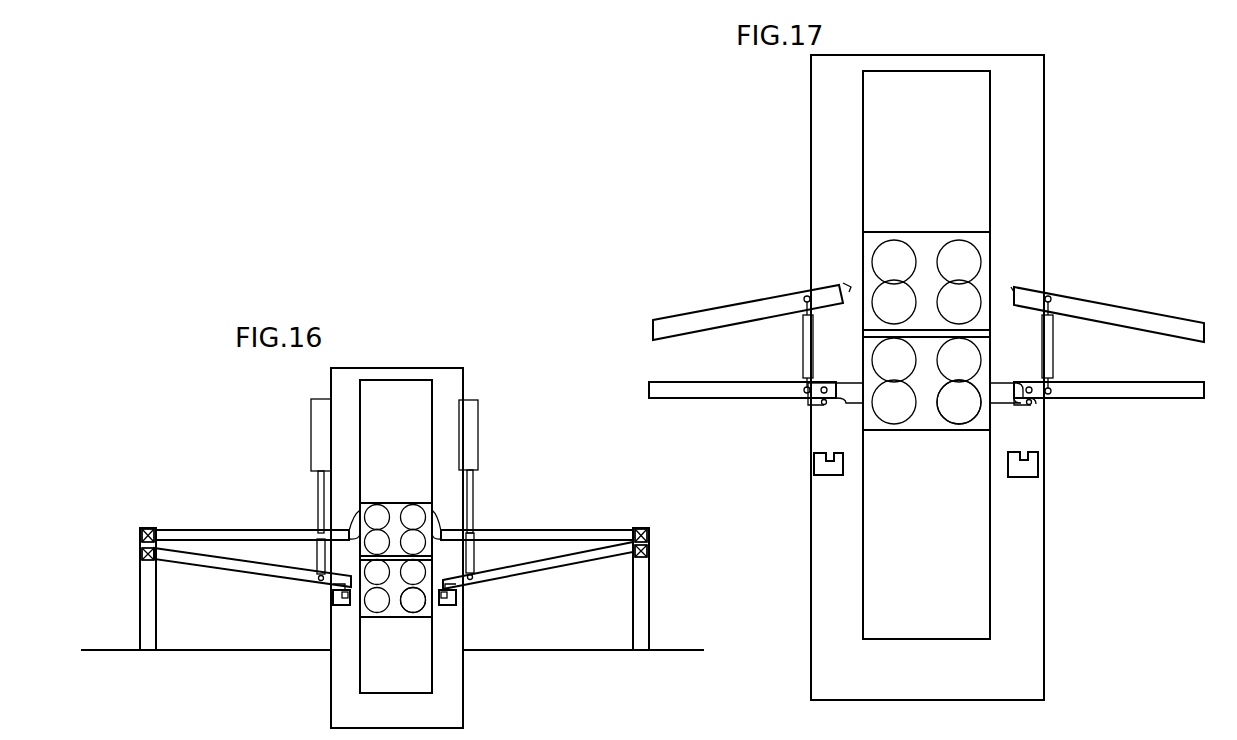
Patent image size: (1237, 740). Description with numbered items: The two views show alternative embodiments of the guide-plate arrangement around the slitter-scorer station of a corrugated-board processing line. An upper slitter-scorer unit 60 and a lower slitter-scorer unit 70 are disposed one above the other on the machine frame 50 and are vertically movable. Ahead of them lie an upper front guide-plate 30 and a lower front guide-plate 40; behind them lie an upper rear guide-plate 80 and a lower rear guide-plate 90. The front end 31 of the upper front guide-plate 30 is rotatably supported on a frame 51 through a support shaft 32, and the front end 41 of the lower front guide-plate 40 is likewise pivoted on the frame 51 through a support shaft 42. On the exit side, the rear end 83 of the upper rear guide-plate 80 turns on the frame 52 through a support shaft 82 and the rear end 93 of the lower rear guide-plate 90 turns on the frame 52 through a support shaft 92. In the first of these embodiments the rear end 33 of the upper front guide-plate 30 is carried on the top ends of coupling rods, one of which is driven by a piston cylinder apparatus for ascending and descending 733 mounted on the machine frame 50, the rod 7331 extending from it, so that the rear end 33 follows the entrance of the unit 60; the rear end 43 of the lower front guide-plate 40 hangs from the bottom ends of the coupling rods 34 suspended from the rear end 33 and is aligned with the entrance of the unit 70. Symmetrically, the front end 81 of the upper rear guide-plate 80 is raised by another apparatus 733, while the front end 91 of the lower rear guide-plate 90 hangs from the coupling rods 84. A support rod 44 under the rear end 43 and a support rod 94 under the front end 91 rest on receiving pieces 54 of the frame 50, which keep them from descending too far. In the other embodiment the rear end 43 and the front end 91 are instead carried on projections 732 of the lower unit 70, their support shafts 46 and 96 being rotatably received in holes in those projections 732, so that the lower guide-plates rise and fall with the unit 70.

In FIG. 16, the upper front guide-plate 30 is at (228, 528).
In FIG. 17, the upper front guide-plate 30 is at (672, 316).
In FIG. 16, the front end of upper front guide-plate 31 is at (142, 531).
In FIG. 16, the support shaft 32 is at (150, 529).
In FIG. 16, the rear end of upper front guide-plate 33 is at (354, 525).
In FIG. 17, the rear end of upper front guide-plate 33 is at (850, 287).
In FIG. 16, the coupling rods 34 is at (318, 553).
In FIG. 17, the coupling rods 34 is at (802, 342).
In FIG. 16, the lower front guide-plate 40 is at (230, 566).
In FIG. 17, the lower front guide-plate 40 is at (708, 400).
In FIG. 16, the front end of lower front guide-plate 41 is at (142, 550).
In FIG. 16, the support shaft 42 is at (154, 560).
In FIG. 16, the rear end of lower front guide-plate 43 is at (381, 590).
In FIG. 17, the rear end of lower front guide-plate 43 is at (884, 385).
In FIG. 16, the support rod 44 is at (335, 584).
In FIG. 17, the support rod 44 is at (822, 404).
In FIG. 17, the support shaft 46 is at (825, 382).
In FIG. 16, the machine frame 50 is at (340, 386).
In FIG. 17, the machine frame 50 is at (828, 118).
In FIG. 16, the frame 51 is at (144, 637).
In FIG. 16, the frame 52 is at (632, 637).
In FIG. 16, the receiving pieces 54 is at (332, 600).
In FIG. 17, the receiving pieces 54 is at (812, 465).
In FIG. 16, the upper slitter-scorer unit 60 is at (394, 510).
In FIG. 17, the upper slitter-scorer unit 60 is at (918, 250).
In FIG. 16, the lower slitter-scorer unit 70 is at (397, 608).
In FIG. 17, the lower slitter-scorer unit 70 is at (927, 415).
In FIG. 16, the upper rear guide-plate 80 is at (548, 528).
In FIG. 17, the upper rear guide-plate 80 is at (1108, 300).
In FIG. 16, the front end of upper rear guide-plate 81 is at (437, 525).
In FIG. 17, the front end of upper rear guide-plate 81 is at (1005, 292).
In FIG. 16, the support shaft 82 is at (639, 529).
In FIG. 16, the rear end of upper rear guide-plate 83 is at (647, 533).
In FIG. 16, the coupling rods 84 is at (473, 552).
In FIG. 17, the coupling rods 84 is at (1052, 345).
In FIG. 16, the lower rear guide-plate 90 is at (554, 572).
In FIG. 17, the lower rear guide-plate 90 is at (1130, 400).
In FIG. 16, the front end of lower rear guide-plate 91 is at (418, 585).
In FIG. 17, the front end of lower rear guide-plate 91 is at (977, 388).
In FIG. 16, the support shaft 92 is at (650, 555).
In FIG. 16, the rear end of lower rear guide-plate 93 is at (649, 540).
In FIG. 16, the support rod 94 is at (456, 590).
In FIG. 17, the support rod 94 is at (1035, 404).
In FIG. 17, the support shaft 96 is at (1027, 386).
In FIG. 17, the projections 732 is at (850, 393).
In FIG. 16, the apparatus for ascending and descending 733 is at (316, 435).
In FIG. 16, the guide rod 7331 is at (318, 490).